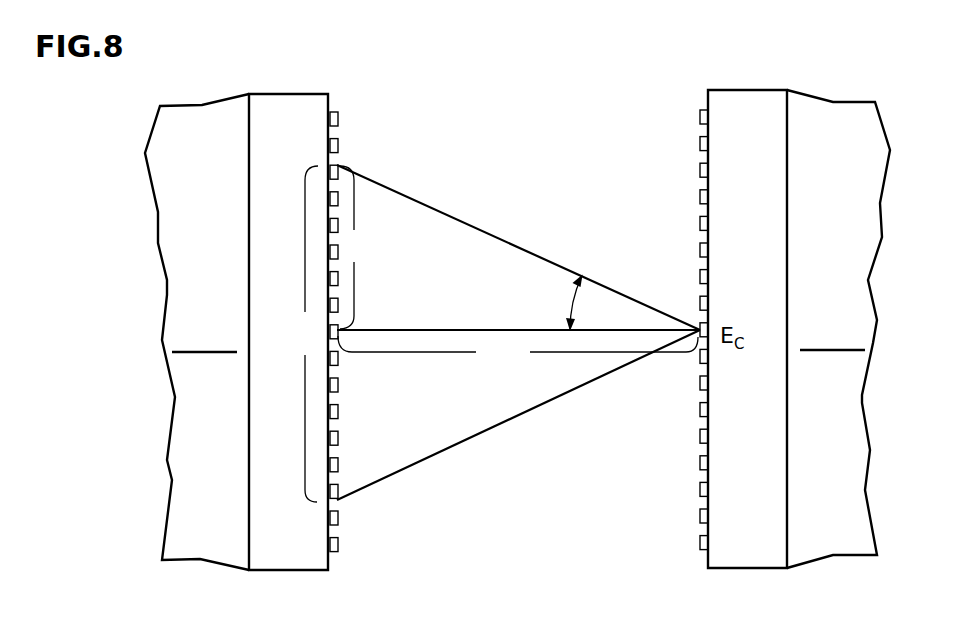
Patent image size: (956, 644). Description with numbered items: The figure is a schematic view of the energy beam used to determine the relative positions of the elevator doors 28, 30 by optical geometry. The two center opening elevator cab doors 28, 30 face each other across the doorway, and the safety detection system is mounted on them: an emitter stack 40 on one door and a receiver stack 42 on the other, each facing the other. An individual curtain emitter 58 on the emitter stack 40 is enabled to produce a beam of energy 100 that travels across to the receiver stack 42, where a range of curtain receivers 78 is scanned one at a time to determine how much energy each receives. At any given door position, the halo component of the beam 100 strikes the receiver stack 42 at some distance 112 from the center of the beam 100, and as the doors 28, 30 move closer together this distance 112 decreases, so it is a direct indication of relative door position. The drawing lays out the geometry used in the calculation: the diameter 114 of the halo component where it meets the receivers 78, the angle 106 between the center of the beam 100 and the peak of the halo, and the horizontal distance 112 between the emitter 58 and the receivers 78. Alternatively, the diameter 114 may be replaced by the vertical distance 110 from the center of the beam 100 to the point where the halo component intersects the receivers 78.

The elevator cab door 28 is at (859, 311).
The elevator cab door 30 is at (174, 314).
The emitter stack 40 is at (706, 567).
The receiver stack 42 is at (331, 568).
The curtain emitter lens 58 is at (707, 321).
The curtain receiver lens 78 is at (333, 112).
The curtain beam 100 is at (531, 141).
The angle 106 is at (575, 297).
The vertical distance 110 is at (360, 247).
The distance 112 is at (518, 349).
The diameter 114 is at (302, 334).